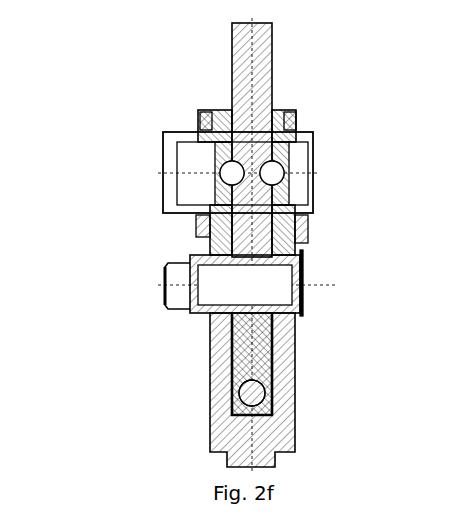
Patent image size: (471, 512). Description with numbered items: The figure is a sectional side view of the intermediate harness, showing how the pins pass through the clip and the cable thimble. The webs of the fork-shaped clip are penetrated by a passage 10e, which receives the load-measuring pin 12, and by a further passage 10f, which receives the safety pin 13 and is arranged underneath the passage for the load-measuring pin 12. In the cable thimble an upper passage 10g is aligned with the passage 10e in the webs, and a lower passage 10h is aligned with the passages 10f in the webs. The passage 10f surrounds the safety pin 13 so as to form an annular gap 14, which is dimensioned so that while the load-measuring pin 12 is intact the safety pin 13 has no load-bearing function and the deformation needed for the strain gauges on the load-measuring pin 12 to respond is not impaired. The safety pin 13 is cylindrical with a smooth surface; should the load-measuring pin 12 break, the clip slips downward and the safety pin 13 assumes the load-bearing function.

The passage 10e is at (200, 117).
The further passage 10f is at (192, 247).
The upper passage 10g is at (296, 112).
The lower passage 10h is at (298, 234).
The load-measuring pin 12 is at (313, 174).
The safety pin 13 is at (305, 287).
The annular gap 14 is at (207, 323).